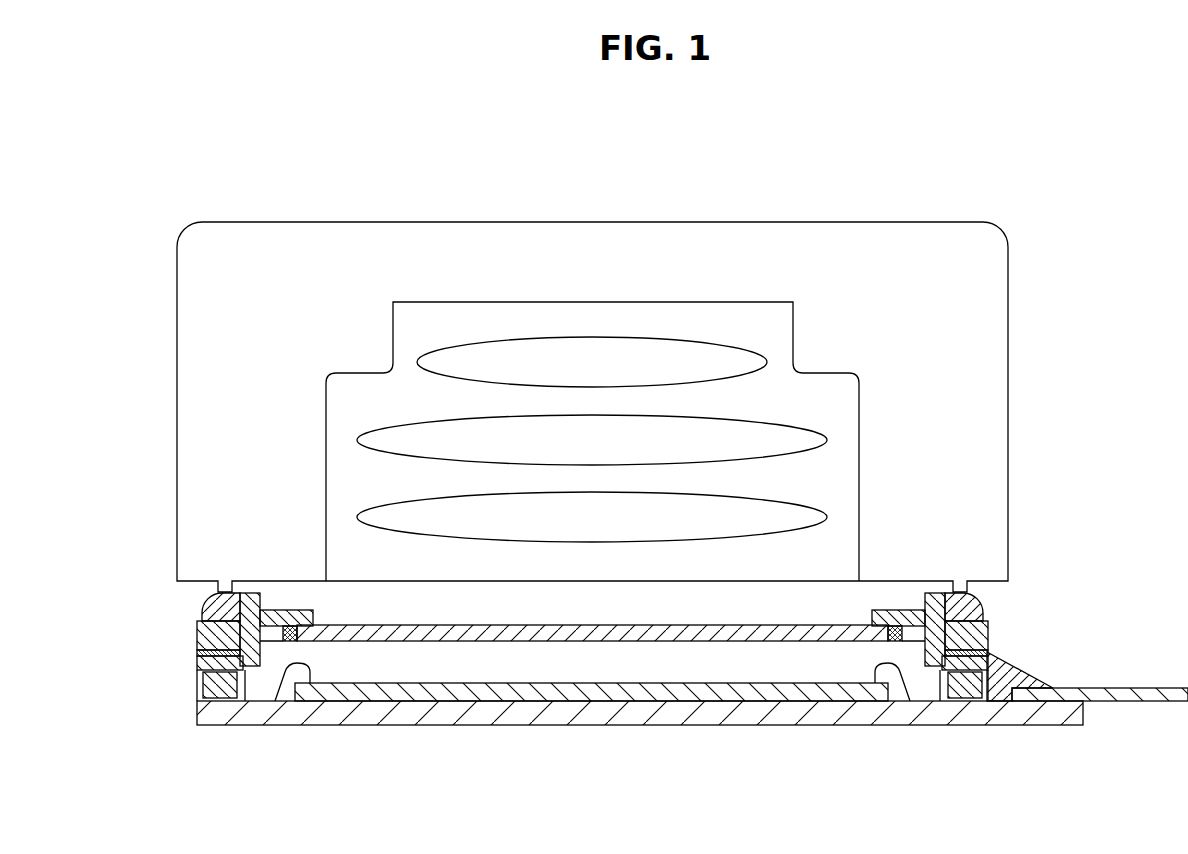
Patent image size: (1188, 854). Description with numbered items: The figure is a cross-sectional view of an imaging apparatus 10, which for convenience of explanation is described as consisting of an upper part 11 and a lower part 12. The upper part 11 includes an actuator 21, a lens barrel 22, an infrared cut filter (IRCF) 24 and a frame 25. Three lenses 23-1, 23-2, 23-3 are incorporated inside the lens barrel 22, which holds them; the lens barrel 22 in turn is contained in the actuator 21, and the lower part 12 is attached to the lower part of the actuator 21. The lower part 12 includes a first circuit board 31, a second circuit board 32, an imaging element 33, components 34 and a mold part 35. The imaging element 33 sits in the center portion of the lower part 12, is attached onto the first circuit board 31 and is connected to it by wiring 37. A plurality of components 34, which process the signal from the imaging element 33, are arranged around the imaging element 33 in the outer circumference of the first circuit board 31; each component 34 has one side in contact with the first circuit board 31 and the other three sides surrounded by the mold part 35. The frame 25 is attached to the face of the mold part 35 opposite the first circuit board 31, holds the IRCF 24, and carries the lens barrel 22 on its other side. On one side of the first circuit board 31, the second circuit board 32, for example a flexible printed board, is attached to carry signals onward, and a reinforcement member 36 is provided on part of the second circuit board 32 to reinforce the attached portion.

The imaging apparatus 10 is at (537, 222).
The upper part 11 is at (163, 222).
The lower part 12 is at (163, 655).
The actuator 21 is at (985, 277).
The lens barrel 22 is at (690, 302).
The lens 23-1 is at (768, 362).
The lens 23-2 is at (827, 440).
The lens 23-3 is at (827, 517).
The infrared cut filter (IRCF) 24 is at (785, 633).
The frame 25 is at (985, 632).
The first circuit board 31 is at (683, 712).
The second circuit board 32 is at (1125, 696).
The imaging element 33 is at (573, 690).
The component 34 is at (963, 690).
The mold part 35 is at (987, 662).
The reinforcement member 36 is at (1002, 692).
The wiring 37 is at (920, 690).